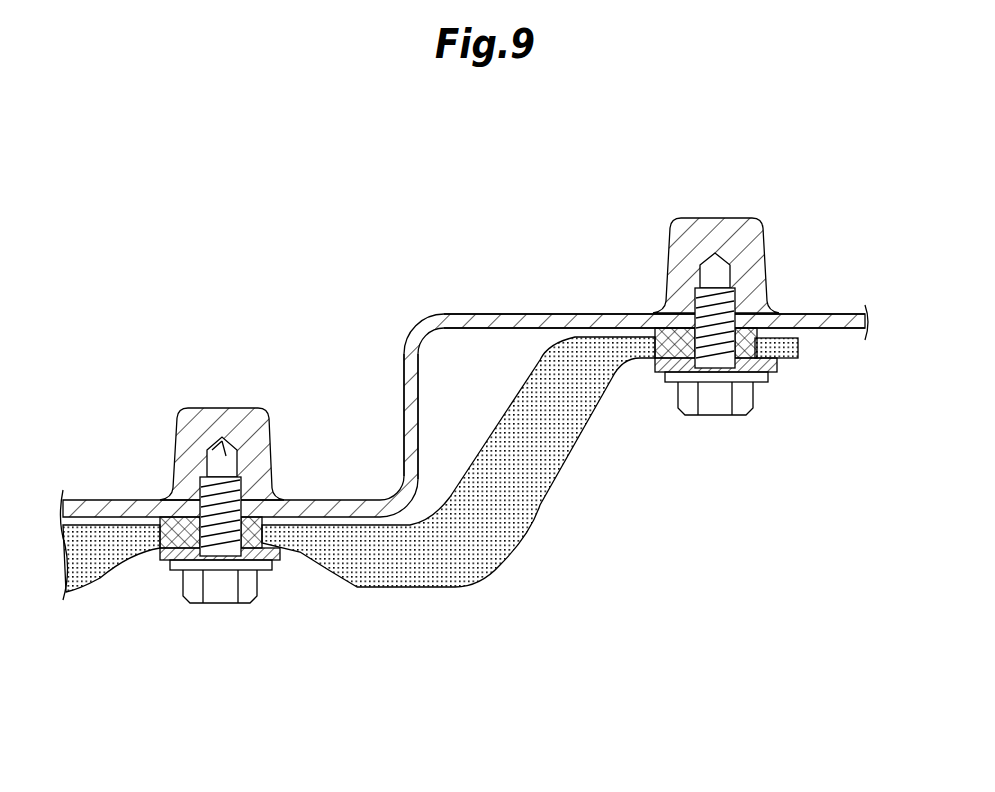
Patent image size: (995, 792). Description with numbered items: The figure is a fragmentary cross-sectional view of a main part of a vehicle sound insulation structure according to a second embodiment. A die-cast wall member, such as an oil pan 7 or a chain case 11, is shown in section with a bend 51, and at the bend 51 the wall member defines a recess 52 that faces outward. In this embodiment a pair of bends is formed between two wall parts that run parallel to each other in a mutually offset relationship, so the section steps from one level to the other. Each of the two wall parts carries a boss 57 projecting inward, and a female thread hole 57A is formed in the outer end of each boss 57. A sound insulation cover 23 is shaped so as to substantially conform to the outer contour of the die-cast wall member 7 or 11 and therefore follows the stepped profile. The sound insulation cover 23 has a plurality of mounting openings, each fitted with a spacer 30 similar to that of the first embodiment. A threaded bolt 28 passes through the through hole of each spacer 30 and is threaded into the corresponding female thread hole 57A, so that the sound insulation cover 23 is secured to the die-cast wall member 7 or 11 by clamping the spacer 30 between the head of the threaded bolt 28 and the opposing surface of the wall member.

The oil pan 7 is at (464, 417).
The chain case 11 is at (487, 320).
The sound insulation cover 23 is at (477, 563).
The threaded bolt 28 is at (205, 604).
The spacer 30 is at (160, 558).
The bend 51 is at (427, 352).
The recess 52 is at (492, 383).
The boss 57 is at (190, 448).
The female thread hole 57A is at (223, 488).